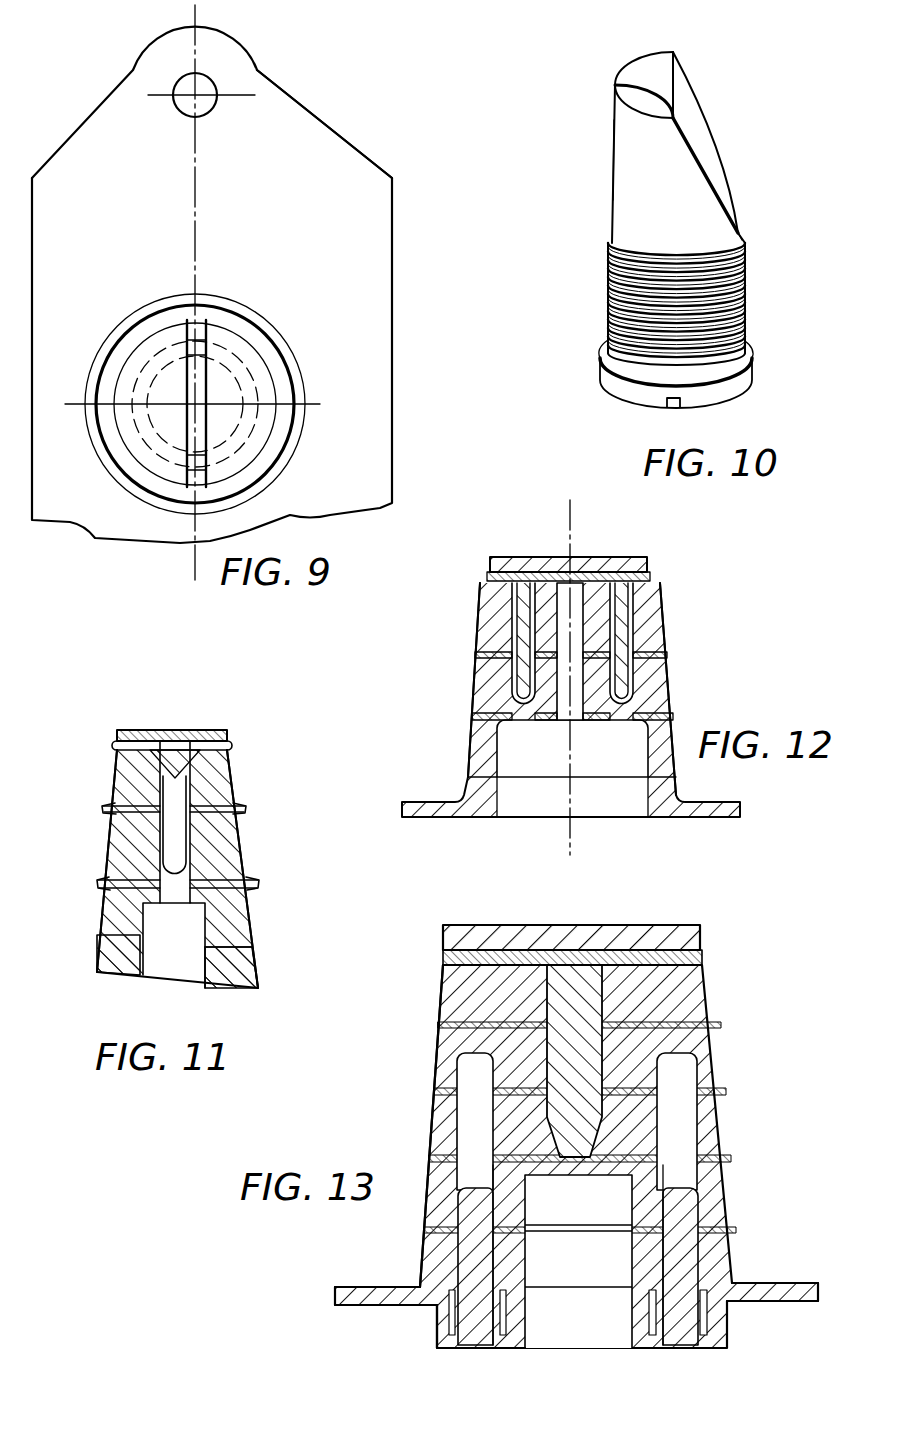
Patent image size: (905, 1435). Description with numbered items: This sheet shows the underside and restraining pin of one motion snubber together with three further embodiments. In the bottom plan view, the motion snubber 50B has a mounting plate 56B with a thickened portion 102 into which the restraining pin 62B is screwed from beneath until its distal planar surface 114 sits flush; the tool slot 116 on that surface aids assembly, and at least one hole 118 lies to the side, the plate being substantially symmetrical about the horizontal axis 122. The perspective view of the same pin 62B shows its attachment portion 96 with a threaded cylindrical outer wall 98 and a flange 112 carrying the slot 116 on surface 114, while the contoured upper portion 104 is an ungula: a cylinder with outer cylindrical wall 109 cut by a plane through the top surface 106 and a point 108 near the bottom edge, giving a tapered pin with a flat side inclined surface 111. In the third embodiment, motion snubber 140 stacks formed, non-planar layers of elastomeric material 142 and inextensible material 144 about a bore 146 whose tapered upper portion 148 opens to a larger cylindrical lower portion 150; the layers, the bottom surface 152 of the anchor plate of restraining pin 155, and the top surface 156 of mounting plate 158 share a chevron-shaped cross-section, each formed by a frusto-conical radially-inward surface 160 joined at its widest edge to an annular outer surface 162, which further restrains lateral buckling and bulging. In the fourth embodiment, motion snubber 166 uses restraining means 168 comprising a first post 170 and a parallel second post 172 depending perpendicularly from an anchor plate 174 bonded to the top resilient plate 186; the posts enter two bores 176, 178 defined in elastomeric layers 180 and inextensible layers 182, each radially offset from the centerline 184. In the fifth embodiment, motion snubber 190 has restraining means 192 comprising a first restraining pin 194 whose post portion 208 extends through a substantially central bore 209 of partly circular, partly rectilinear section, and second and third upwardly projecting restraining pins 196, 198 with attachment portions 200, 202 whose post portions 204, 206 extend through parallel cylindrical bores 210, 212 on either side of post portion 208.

In FIG. 9, the motion snubber 50B is at (107, 74).
In FIG. 9, the hole 118 is at (215, 82).
In FIG. 9, the mounting plate 56B is at (333, 125).
In FIG. 9, the thickened portion 102 is at (262, 323).
In FIG. 9, the restraining pin 62B is at (162, 330).
In FIG. 10, the restraining pin 62B is at (728, 96).
In FIG. 9, the distal planar surface 114 is at (157, 418).
In FIG. 10, the distal planar surface 114 is at (727, 398).
In FIG. 9, the slot 116 is at (201, 328).
In FIG. 10, the slot 116 is at (675, 412).
In FIG. 9, the horizontal axis 122 is at (306, 404).
In FIG. 10, the top surface 106 is at (642, 62).
In FIG. 10, the contoured upper portion 104 is at (618, 122).
In FIG. 10, the flat side inclined surface 111 is at (718, 148).
In FIG. 10, the outer cylindrical wall 109 is at (612, 178).
In FIG. 10, the point 108 is at (742, 232).
In FIG. 10, the attachment portion 96 is at (740, 300).
In FIG. 10, the threaded cylindrical outer wall 98 is at (612, 290).
In FIG. 10, the flange 112 is at (748, 376).
In FIG. 11, the motion snubber 140 is at (240, 723).
In FIG. 11, the bottom surface 152 is at (115, 764).
In FIG. 11, the layers of elastomeric material 142 is at (112, 810).
In FIG. 11, the frusto-conical radially-inward surface 160 is at (228, 786).
In FIG. 11, the restraining pin 155 is at (150, 853).
In FIG. 11, the annular radially-extending outer surface 162 is at (238, 813).
In FIG. 11, the layers of substantially inextensible material 144 is at (246, 881).
In FIG. 11, the tapered upper portion 148 is at (110, 892).
In FIG. 11, the bore 146 is at (174, 945).
In FIG. 11, the cylindrical lower portion 150 is at (235, 936).
In FIG. 11, the mounting plate 158 is at (262, 978).
In FIG. 11, the top surface 156 is at (145, 970).
In FIG. 12, the motion snubber 166 is at (688, 563).
In FIG. 12, the top resilient plate 186 is at (532, 556).
In FIG. 12, the anchor plate 174 is at (487, 577).
In FIG. 12, the bore 176 is at (520, 712).
In FIG. 12, the bore 178 is at (625, 712).
In FIG. 12, the means to restrain bulging and buckling 168 is at (522, 605).
In FIG. 12, the centerline 184 is at (575, 828).
In FIG. 12, the layers of substantially inextensible material 182 is at (469, 713).
In FIG. 12, the layers of elastomeric material 180 is at (667, 680).
In FIG. 12, the first post 170 is at (522, 625).
In FIG. 12, the second post 172 is at (634, 637).
In FIG. 13, the motion snubber 190 is at (718, 911).
In FIG. 13, the post portion 208 is at (625, 1073).
In FIG. 13, the first restraining pin 194 is at (586, 1015).
In FIG. 13, the bore 209 is at (566, 1322).
In FIG. 13, the cylindrical bore 212 is at (470, 1186).
In FIG. 13, the cylindrical bore 210 is at (708, 1131).
In FIG. 13, the post portion 206 is at (460, 1212).
In FIG. 13, the post portion 204 is at (700, 1196).
In FIG. 13, the means for restraining buckling and bulging 192 is at (450, 1113).
In FIG. 13, the third restraining pin 198 is at (478, 1258).
In FIG. 13, the second restraining pin 196 is at (692, 1257).
In FIG. 13, the attachment portion 200 is at (692, 1284).
In FIG. 13, the attachment portion 202 is at (446, 1322).